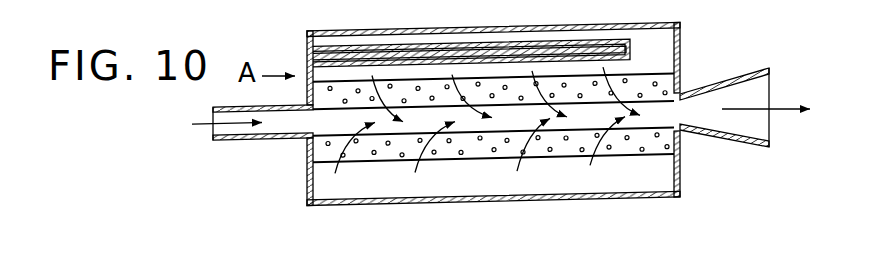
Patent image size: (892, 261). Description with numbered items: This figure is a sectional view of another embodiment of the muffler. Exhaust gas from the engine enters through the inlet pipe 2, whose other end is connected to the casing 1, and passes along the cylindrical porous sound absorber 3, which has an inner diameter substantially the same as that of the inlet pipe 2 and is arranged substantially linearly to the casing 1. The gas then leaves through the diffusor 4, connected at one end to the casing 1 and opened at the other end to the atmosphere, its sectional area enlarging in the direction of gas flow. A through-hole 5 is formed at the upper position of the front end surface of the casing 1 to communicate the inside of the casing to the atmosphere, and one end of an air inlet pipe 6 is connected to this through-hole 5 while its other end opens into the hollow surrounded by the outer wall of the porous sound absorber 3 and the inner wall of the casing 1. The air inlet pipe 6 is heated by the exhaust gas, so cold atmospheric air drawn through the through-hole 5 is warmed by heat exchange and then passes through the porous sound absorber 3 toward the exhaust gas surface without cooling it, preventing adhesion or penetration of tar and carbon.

The casing 1 is at (547, 26).
The inlet pipe 2 is at (258, 106).
The porous sound absorber 3 is at (467, 159).
The diffusor 4 is at (715, 133).
The through-hole 5 is at (307, 54).
The air inlet pipe 6 is at (420, 50).